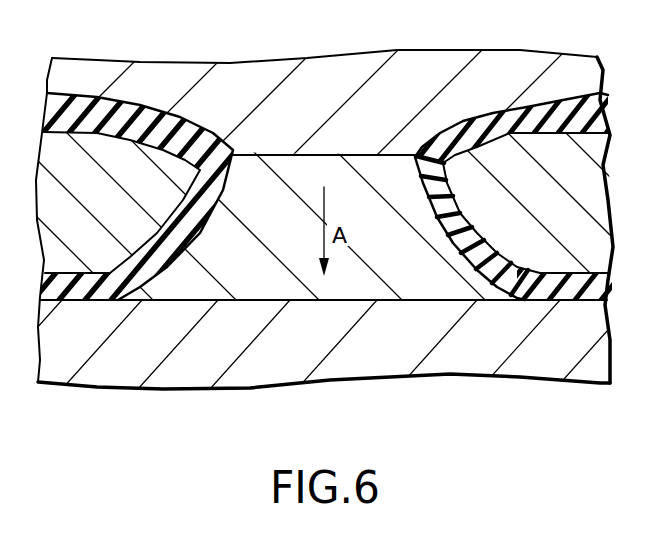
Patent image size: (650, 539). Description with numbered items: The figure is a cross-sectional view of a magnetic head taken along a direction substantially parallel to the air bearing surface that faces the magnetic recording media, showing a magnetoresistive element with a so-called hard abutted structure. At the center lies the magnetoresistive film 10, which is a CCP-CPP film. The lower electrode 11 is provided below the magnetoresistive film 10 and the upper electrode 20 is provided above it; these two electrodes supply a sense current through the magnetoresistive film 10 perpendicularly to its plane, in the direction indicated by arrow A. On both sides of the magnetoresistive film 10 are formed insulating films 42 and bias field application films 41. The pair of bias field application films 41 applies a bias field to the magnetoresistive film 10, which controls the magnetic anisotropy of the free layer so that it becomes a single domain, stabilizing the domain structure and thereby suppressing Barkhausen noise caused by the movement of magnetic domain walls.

The magnetoresistive film 10 is at (300, 280).
The lower electrode 11 is at (490, 350).
The upper electrode 20 is at (340, 110).
The bias field application film 41 is at (103, 247).
The insulating film 42 is at (110, 125).